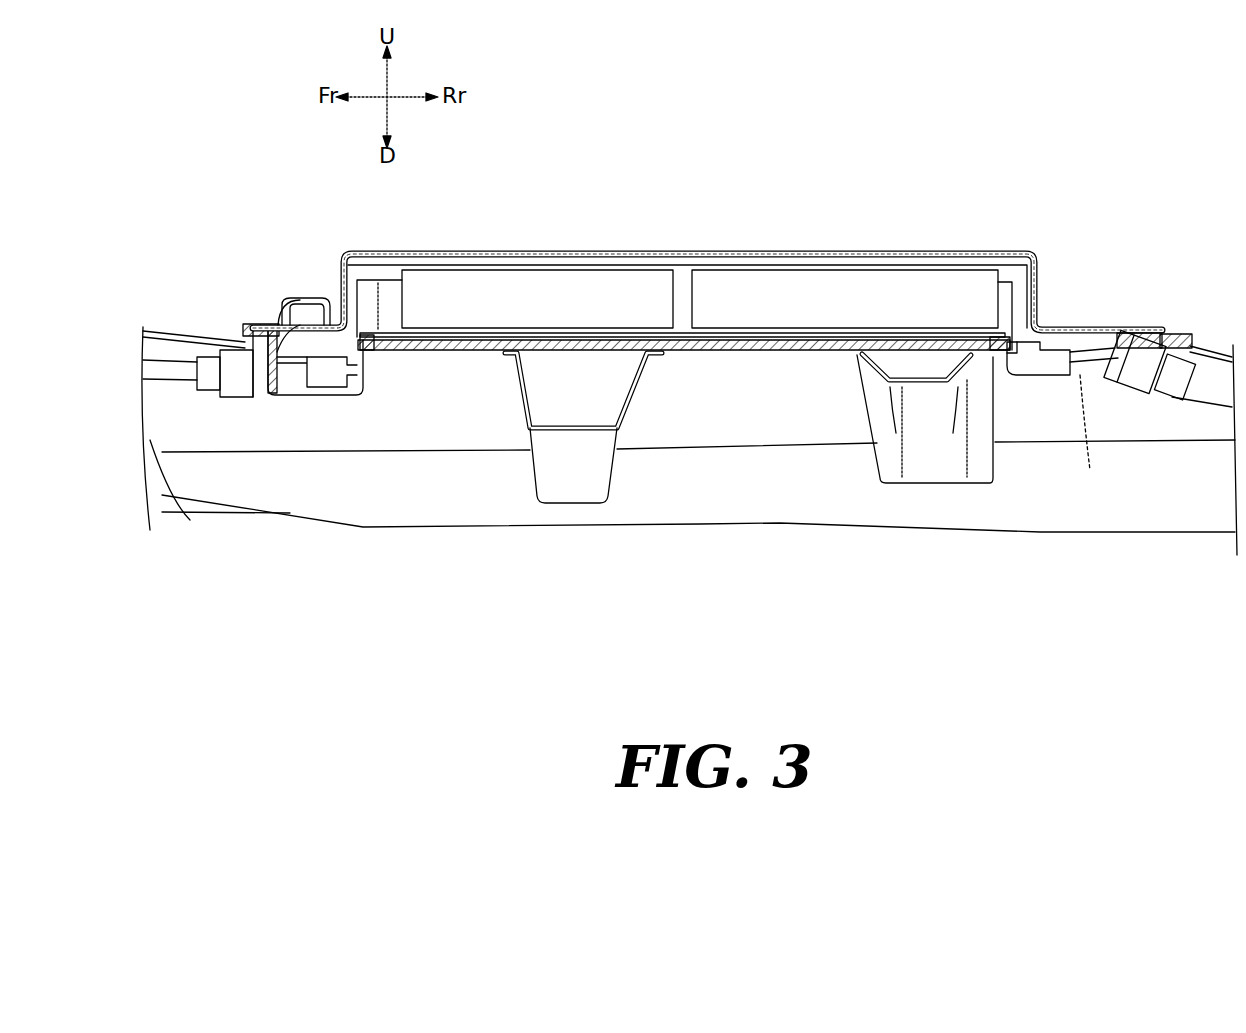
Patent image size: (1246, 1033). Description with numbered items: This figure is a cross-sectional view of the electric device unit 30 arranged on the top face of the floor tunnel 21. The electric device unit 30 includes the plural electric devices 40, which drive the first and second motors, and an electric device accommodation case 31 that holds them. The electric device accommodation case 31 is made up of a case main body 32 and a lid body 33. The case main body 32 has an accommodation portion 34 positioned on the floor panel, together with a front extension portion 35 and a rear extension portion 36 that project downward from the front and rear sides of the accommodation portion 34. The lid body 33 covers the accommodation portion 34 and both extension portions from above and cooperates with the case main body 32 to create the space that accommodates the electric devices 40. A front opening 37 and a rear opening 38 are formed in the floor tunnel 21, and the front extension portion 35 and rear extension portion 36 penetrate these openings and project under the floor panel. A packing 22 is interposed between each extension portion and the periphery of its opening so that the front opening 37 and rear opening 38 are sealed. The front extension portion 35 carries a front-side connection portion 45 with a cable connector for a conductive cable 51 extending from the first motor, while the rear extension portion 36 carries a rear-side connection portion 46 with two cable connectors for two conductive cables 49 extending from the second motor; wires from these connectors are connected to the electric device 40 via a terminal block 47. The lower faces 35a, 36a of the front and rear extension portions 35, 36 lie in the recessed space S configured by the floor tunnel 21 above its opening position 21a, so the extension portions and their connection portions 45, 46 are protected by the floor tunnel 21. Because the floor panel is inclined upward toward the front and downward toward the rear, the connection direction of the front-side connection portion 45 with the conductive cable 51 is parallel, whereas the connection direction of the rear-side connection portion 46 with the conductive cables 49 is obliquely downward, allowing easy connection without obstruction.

The floor tunnel 21 is at (197, 337).
The opening position of the floor tunnel 21a is at (815, 447).
The packing 22 is at (247, 325).
The electric device unit 30 is at (830, 243).
The electric device accommodation case 31 is at (903, 166).
The case main body 32 is at (935, 340).
The lid body 33 is at (900, 332).
The accommodation portion 34 is at (680, 322).
The front extension portion 35 is at (280, 357).
The lower face of the front extension portion 35a is at (283, 375).
The rear extension portion 36 is at (1023, 380).
The lower face of the rear extension portion 36a is at (1080, 378).
The front opening 37 is at (281, 308).
The rear opening 38 is at (1135, 345).
The electric device 40 is at (530, 298).
The front-side connection portion 45 is at (240, 383).
The rear-side connection portion 46 is at (1118, 378).
The terminal block 47 is at (325, 378).
The conductive cable 49 is at (1205, 395).
The conductive cable 51 is at (185, 373).
The recessed space S is at (666, 394).